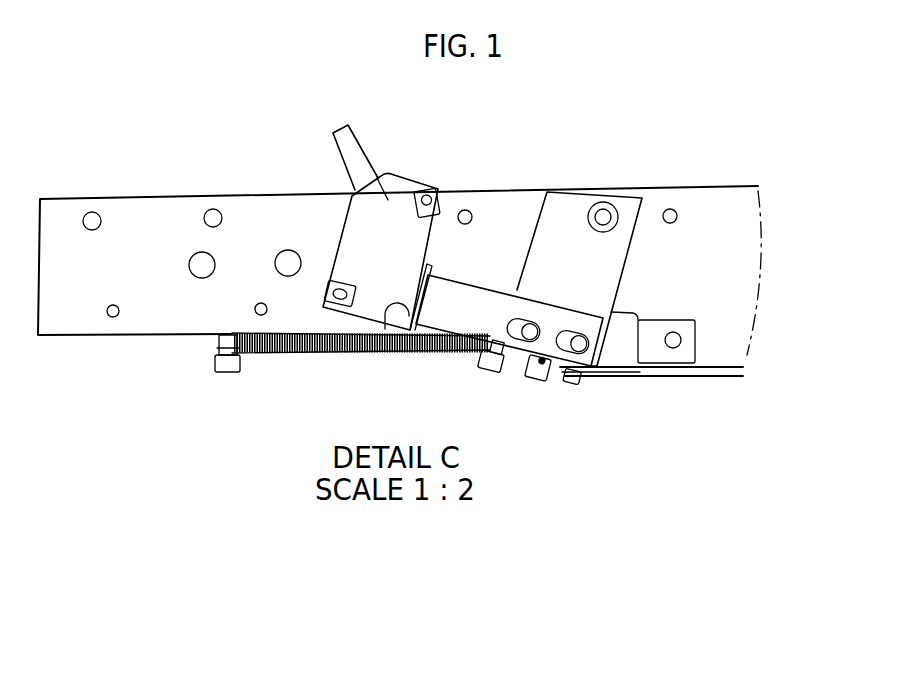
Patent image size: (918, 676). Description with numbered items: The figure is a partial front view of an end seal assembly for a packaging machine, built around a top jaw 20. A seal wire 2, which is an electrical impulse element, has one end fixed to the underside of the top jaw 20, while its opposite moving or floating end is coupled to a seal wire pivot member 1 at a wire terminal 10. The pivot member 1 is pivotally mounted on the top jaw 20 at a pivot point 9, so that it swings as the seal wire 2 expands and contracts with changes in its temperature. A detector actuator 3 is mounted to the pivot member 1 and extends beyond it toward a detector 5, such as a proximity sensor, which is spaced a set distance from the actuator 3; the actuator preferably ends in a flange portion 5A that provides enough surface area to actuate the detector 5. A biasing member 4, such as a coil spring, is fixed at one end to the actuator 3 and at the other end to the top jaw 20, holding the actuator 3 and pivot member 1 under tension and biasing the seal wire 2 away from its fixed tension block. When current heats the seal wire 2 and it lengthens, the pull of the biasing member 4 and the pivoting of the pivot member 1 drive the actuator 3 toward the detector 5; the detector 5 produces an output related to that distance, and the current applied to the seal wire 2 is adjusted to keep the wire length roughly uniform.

The top jaw 20 is at (108, 172).
The detector 5 is at (376, 224).
The clamping strip 5A is at (432, 275).
The detector actuator 3 is at (460, 307).
The seal wire pivot member 1 is at (603, 277).
The pivot point 9 is at (619, 192).
The seal wire 2 is at (605, 392).
The biasing member 4 is at (312, 364).
The wire terminal 10 is at (534, 391).